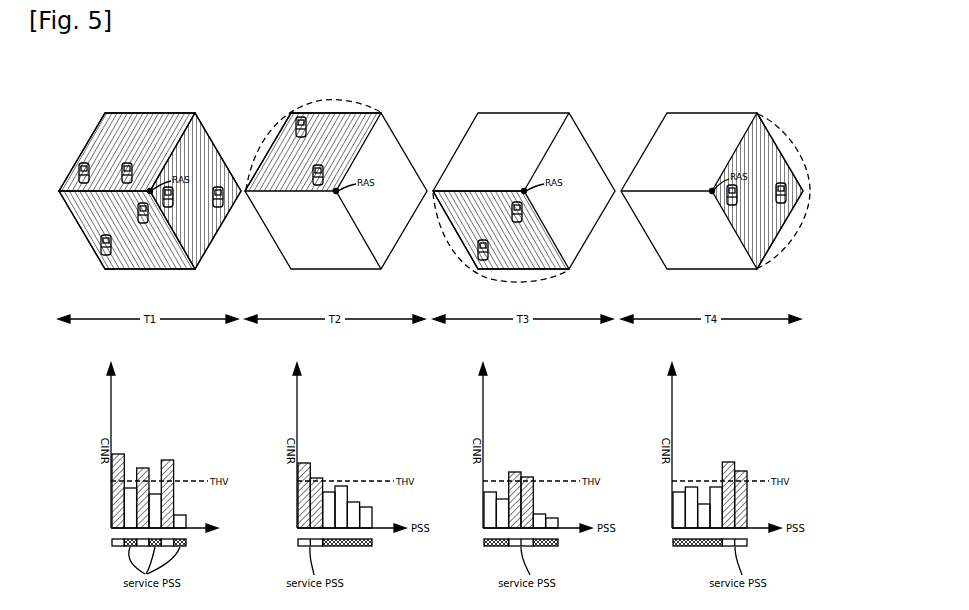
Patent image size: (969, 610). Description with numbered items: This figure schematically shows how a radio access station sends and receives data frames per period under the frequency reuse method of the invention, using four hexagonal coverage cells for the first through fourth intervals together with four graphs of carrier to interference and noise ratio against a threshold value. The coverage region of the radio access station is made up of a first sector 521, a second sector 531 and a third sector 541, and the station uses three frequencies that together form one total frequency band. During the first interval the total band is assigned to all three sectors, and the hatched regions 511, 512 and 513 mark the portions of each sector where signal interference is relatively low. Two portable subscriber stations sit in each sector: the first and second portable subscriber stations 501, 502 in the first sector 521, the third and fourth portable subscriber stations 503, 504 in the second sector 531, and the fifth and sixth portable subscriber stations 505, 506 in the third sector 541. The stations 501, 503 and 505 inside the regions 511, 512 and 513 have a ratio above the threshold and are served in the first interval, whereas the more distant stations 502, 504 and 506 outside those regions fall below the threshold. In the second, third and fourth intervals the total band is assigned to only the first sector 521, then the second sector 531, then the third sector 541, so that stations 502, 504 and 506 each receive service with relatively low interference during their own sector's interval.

The first portable subscriber station 501 is at (123, 166).
The second portable subscriber station 502 is at (81, 168).
The third portable subscriber station 503 is at (145, 224).
The fourth portable subscriber station 504 is at (101, 247).
The fifth portable subscriber station 505 is at (172, 208).
The sixth portable subscriber station 506 is at (220, 187).
The low-interference region of first sector 511 is at (147, 130).
The low-interference region of second sector 512 is at (78, 232).
The low-interference region of third sector 513 is at (208, 233).
The first sector 521 is at (338, 99).
The second sector 531 is at (447, 242).
The third sector 541 is at (790, 138).